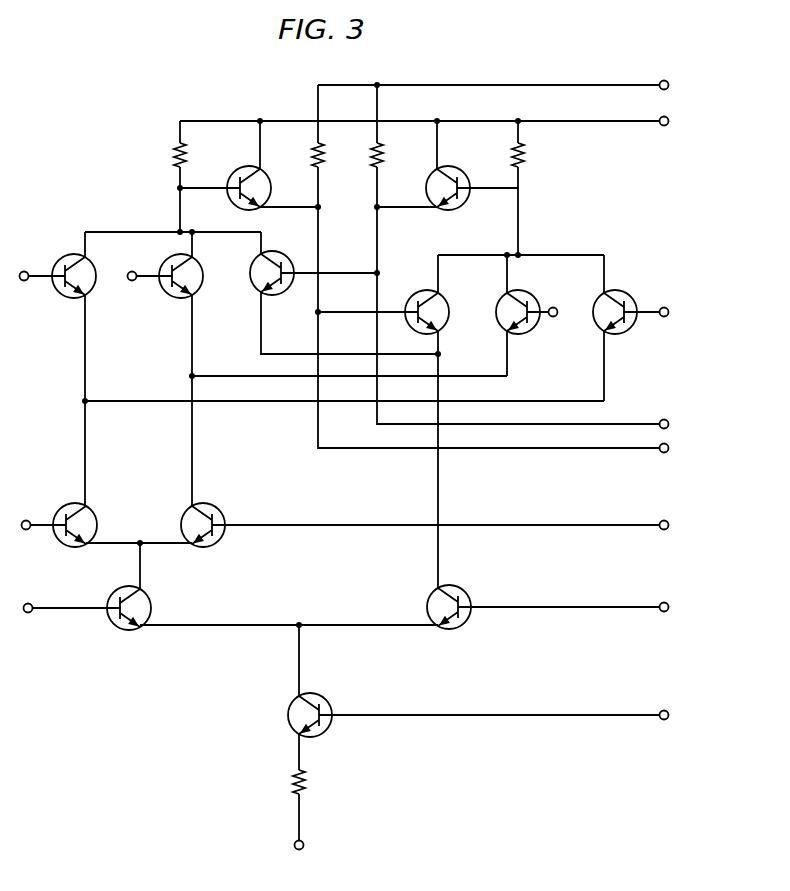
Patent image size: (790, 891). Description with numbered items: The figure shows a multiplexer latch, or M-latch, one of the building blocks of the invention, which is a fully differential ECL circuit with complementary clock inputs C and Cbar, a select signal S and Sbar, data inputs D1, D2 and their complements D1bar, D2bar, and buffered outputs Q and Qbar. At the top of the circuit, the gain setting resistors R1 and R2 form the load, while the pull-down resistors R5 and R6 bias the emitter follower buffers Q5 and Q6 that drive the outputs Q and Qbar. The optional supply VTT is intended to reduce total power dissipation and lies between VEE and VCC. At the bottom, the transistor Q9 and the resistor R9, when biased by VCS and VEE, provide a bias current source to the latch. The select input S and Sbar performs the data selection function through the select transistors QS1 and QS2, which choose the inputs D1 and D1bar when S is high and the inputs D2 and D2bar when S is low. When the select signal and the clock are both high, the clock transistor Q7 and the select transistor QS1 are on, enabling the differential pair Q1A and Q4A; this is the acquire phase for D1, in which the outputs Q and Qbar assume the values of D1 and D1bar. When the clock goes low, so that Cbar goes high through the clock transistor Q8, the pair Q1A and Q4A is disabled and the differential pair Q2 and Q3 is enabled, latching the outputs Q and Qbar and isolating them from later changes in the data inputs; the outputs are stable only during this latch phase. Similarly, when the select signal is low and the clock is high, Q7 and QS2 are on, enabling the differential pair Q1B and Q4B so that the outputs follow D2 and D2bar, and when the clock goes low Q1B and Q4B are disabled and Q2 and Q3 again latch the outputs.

The gain setting resistor R1 is at (168, 176).
The gain setting resistor R2 is at (530, 188).
The pull-down resistor R5 is at (473, 266).
The pull-down resistor R6 is at (515, 254).
The bias current source resistor R9 is at (310, 810).
The differential pair transistor Q1A is at (58, 369).
The differential pair transistor Q1B is at (166, 369).
The latching differential pair transistor Q2 is at (344, 293).
The latching differential pair transistor Q3 is at (383, 421).
The differential pair transistor Q4A is at (631, 328).
The differential pair transistor Q4B is at (515, 315).
The emitter follower buffer Q5 is at (249, 165).
The emitter follower buffer Q6 is at (447, 165).
The clock transistor Q7 is at (231, 586).
The clock transistor Q8 is at (538, 606).
The bias current source transistor Q9 is at (478, 697).
The select transistor QS1 is at (107, 523).
The select transistor QS2 is at (425, 518).
The optional supply VTT is at (686, 85).
The positive supply VCC is at (686, 121).
The current source bias voltage VCS is at (689, 715).
The negative supply VEE is at (320, 845).
The data input D1 is at (12, 276).
The data input D2 is at (115, 276).
The complementary data input D1bar is at (692, 299).
The complementary data input D2bar is at (581, 299).
The buffered output Q is at (680, 424).
The complementary buffered output Qbar is at (687, 437).
The select signal S is at (14, 526).
The complementary select signal Sbar is at (686, 513).
The clock C is at (14, 609).
The complementary clock Cbar is at (686, 595).